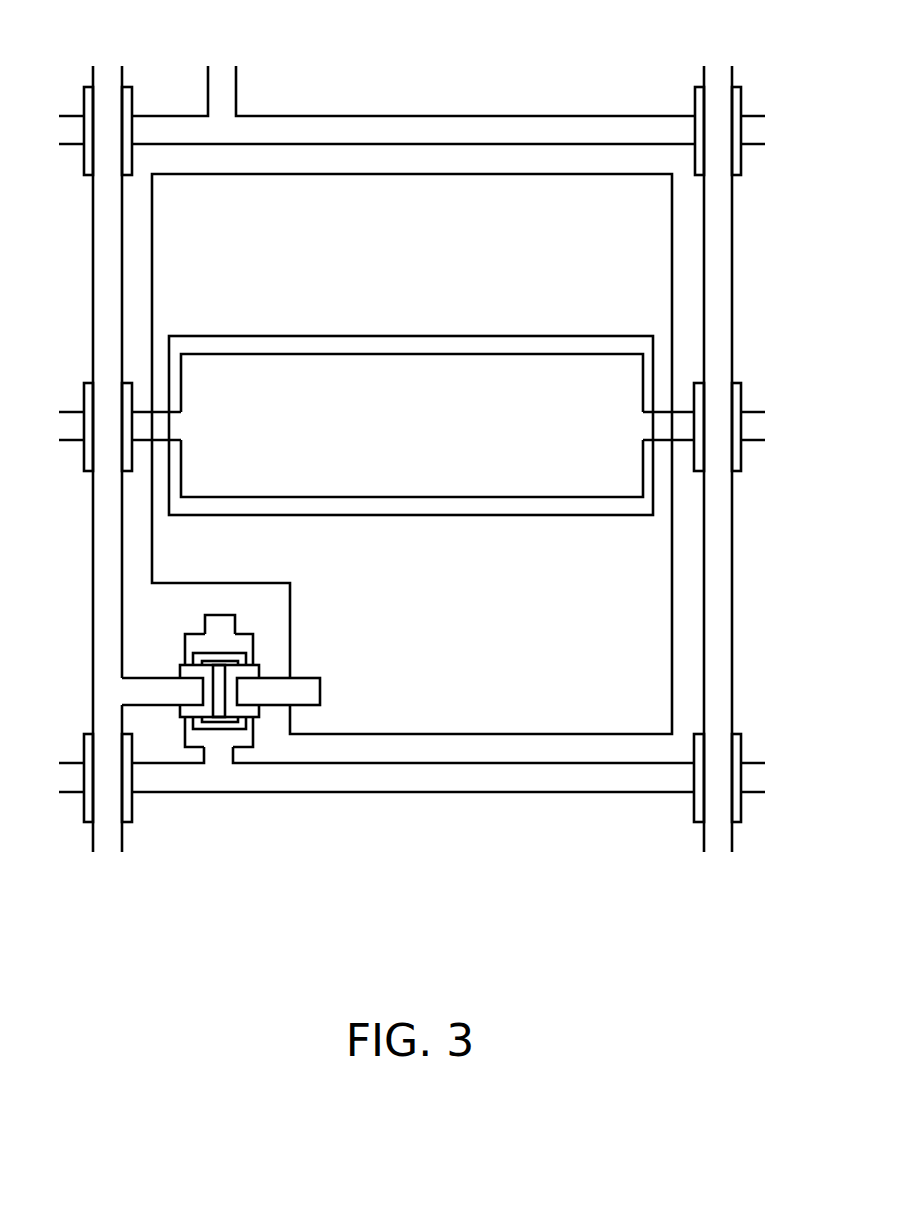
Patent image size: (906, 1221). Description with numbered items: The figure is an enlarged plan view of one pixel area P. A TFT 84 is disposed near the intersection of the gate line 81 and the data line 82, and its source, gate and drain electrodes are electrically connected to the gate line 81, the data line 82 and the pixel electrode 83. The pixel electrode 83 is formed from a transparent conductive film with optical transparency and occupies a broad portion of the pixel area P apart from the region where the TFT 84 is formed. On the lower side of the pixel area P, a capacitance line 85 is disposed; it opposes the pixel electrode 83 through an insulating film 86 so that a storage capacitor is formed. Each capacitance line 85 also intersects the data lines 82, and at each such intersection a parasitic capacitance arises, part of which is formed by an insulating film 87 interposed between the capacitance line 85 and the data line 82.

The pixel area P is at (463, 82).
The gate line 81 is at (368, 128).
The data line 82 is at (100, 280).
The pixel electrode 83 is at (651, 603).
The TFT 84 is at (186, 732).
The capacitance line 85 is at (72, 423).
The insulating film 86 is at (544, 507).
The insulating film 87 is at (87, 455).